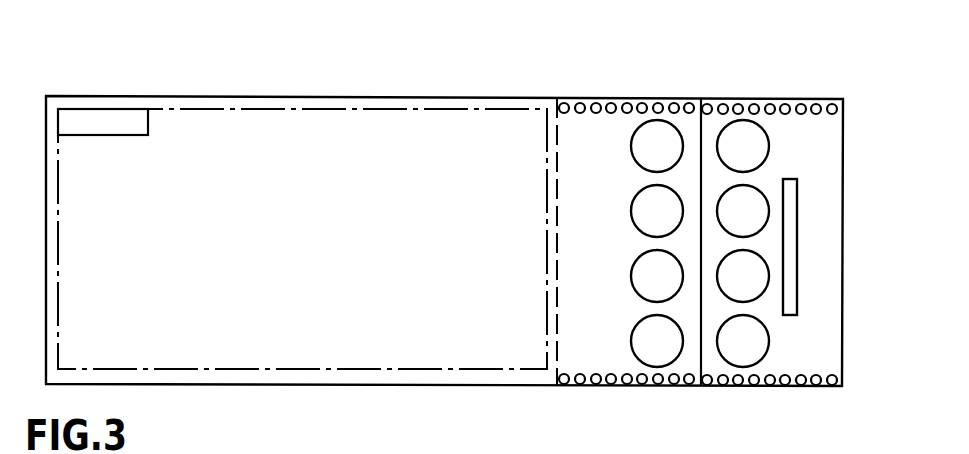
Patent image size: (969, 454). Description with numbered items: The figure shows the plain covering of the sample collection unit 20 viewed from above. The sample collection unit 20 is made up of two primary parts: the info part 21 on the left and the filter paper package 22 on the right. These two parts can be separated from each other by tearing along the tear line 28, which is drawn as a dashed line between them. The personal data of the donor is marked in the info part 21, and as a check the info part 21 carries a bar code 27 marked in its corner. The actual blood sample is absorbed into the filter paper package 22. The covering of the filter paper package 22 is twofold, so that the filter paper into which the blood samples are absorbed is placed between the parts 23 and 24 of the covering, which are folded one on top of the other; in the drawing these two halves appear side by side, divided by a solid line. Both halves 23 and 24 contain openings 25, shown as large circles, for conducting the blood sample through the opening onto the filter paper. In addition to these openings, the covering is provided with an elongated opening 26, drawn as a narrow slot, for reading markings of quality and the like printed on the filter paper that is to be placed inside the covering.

The sample collection unit 20 is at (522, 62).
The info part 21 is at (315, 112).
The filter paper package 22 is at (710, 72).
The covering part 23 is at (617, 387).
The covering part 24 is at (753, 388).
The openings 25 is at (756, 143).
The elongated opening 26 is at (792, 238).
The bar code 27 is at (99, 108).
The tear line 28 is at (557, 236).